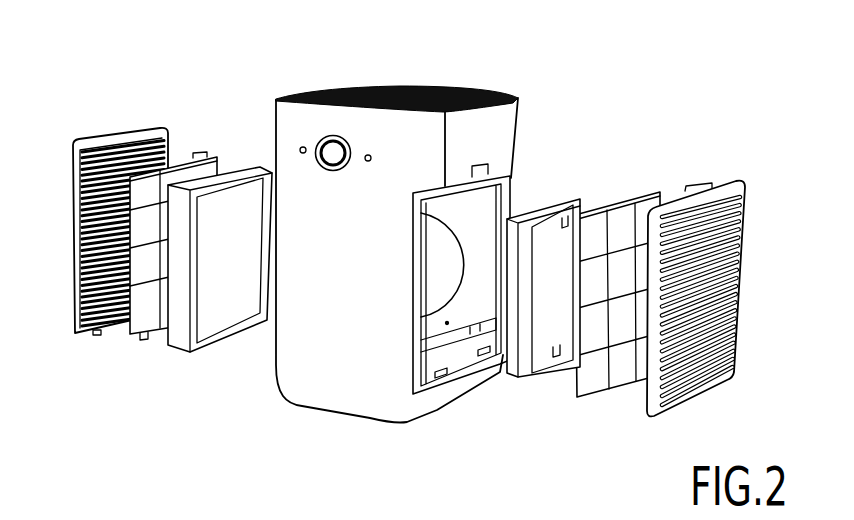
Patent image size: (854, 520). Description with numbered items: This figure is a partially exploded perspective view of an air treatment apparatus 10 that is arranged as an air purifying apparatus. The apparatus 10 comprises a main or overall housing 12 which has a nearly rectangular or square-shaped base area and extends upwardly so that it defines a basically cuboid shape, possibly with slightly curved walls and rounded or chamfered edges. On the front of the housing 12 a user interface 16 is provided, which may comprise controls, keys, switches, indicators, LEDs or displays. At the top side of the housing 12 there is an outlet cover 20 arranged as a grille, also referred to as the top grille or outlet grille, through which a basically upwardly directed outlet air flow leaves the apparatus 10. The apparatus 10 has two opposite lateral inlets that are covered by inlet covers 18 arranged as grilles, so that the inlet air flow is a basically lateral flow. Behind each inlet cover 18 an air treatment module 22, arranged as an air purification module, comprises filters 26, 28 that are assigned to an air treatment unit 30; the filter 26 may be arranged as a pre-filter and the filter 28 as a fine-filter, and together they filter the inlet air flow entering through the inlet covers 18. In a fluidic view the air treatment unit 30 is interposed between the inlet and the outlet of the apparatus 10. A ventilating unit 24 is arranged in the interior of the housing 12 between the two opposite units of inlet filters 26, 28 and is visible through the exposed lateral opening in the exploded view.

The air treatment apparatus 10 is at (415, 235).
The housing 12 is at (337, 369).
The user interface 16 is at (332, 152).
The inlet cover 18 is at (685, 368).
The outlet cover 20 is at (407, 92).
The air treatment module 22 is at (631, 258).
The ventilating unit 24 is at (437, 233).
The filter 26 is at (593, 369).
The filter 28 is at (517, 369).
The air treatment unit 30 is at (666, 258).